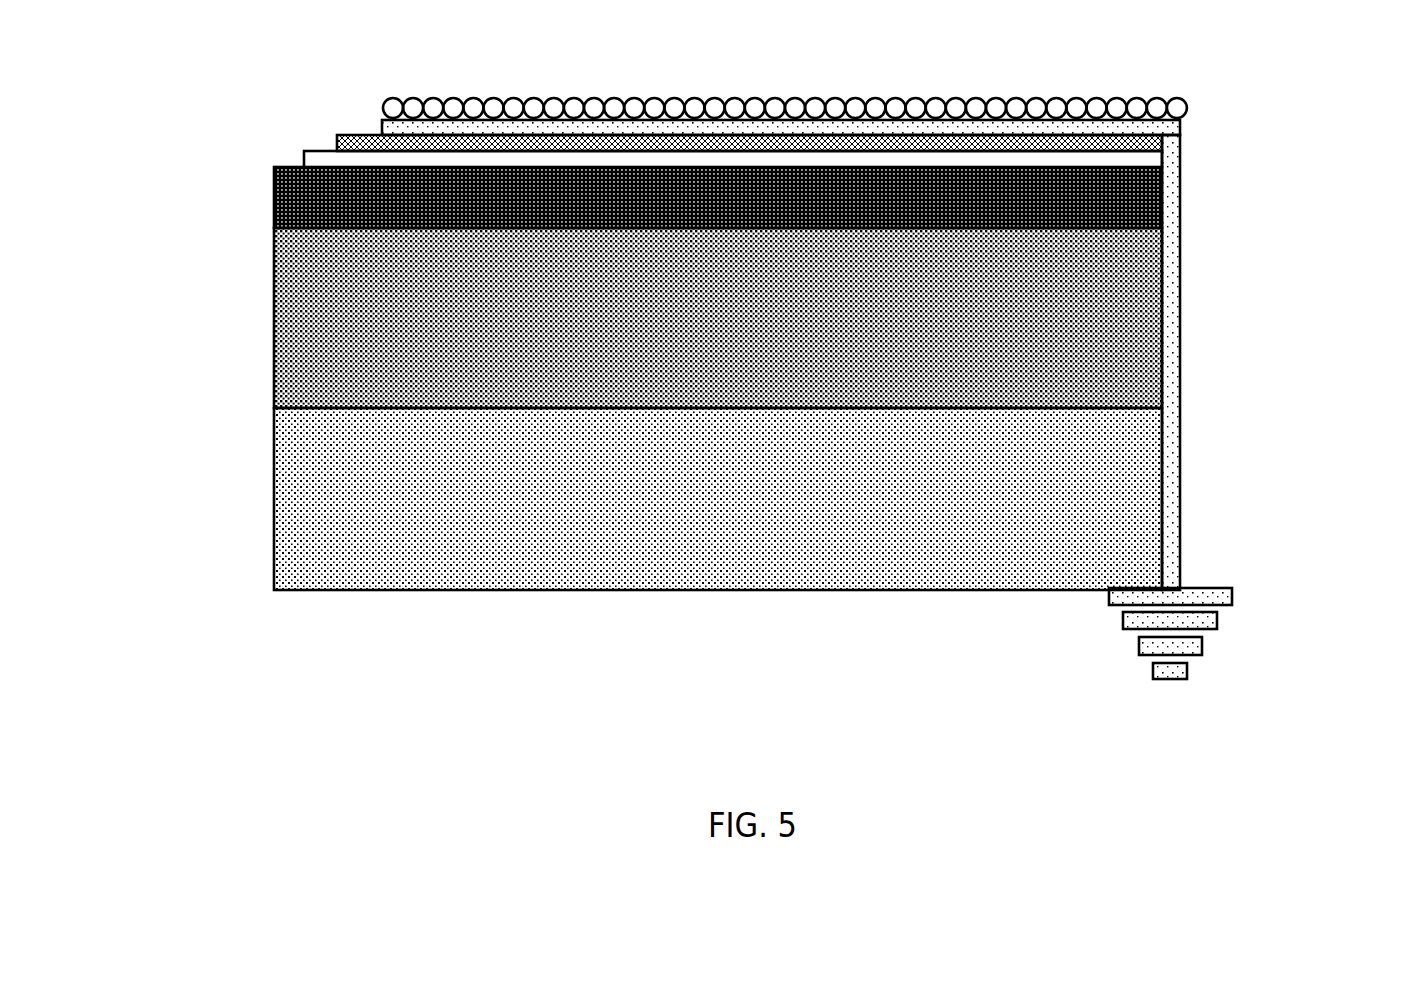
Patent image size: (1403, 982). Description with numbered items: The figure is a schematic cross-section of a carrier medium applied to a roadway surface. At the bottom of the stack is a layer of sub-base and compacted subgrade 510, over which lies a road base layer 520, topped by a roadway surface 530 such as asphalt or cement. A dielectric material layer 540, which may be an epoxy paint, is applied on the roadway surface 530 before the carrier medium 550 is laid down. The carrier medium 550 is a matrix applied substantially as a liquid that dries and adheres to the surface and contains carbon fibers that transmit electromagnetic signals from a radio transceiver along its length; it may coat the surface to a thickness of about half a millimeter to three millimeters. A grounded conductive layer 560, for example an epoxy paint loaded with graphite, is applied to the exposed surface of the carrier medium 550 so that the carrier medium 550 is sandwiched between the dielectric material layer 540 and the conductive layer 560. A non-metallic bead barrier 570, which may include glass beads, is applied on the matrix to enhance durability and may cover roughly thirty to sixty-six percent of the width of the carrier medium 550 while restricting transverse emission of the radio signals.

The sub-base and compacted subgrade 510 is at (275, 534).
The road base layer 520 is at (275, 363).
The roadway surface 530 is at (275, 222).
The dielectric material layer 540 is at (304, 159).
The carrier medium 550 is at (336, 143).
The grounded conductive layer 560 is at (1182, 132).
The non-metallic bead barrier 570 is at (352, 104).